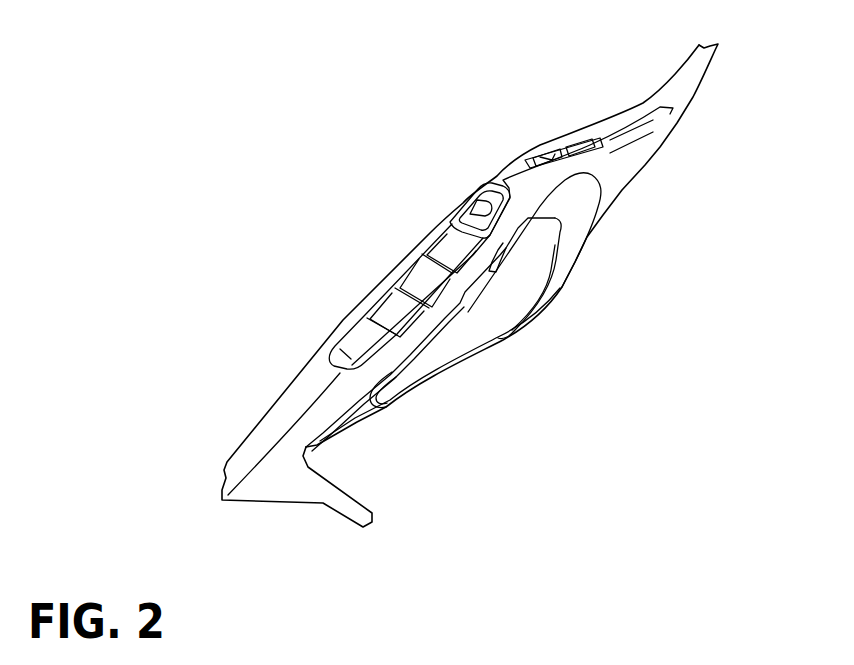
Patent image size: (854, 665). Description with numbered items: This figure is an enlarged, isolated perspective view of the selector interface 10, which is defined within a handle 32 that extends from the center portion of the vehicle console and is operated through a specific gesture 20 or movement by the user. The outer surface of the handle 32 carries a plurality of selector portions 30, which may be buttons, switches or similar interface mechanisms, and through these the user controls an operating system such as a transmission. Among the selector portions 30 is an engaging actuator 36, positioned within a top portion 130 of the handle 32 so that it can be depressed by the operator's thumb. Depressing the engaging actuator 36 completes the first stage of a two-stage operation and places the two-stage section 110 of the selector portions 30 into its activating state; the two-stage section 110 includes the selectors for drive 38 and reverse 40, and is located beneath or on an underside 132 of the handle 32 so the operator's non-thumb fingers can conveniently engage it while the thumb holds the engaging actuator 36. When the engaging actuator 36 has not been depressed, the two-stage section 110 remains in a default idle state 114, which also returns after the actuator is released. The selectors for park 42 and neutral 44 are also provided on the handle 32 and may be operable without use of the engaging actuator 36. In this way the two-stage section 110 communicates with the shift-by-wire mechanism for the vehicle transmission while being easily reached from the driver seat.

The selector interface 10 is at (357, 248).
The gesture 20 is at (540, 664).
The selector portions 30 is at (462, 157).
The handle 32 is at (410, 340).
The engaging actuator 36 is at (473, 208).
The drive selector 38 is at (508, 250).
The reverse selector 40 is at (480, 282).
The park selector 42 is at (567, 137).
The neutral selector 44 is at (540, 153).
The two-stage section 110 is at (480, 308).
The idle state 114 is at (492, 167).
The top portion 130 is at (512, 170).
The underside 132 is at (445, 300).